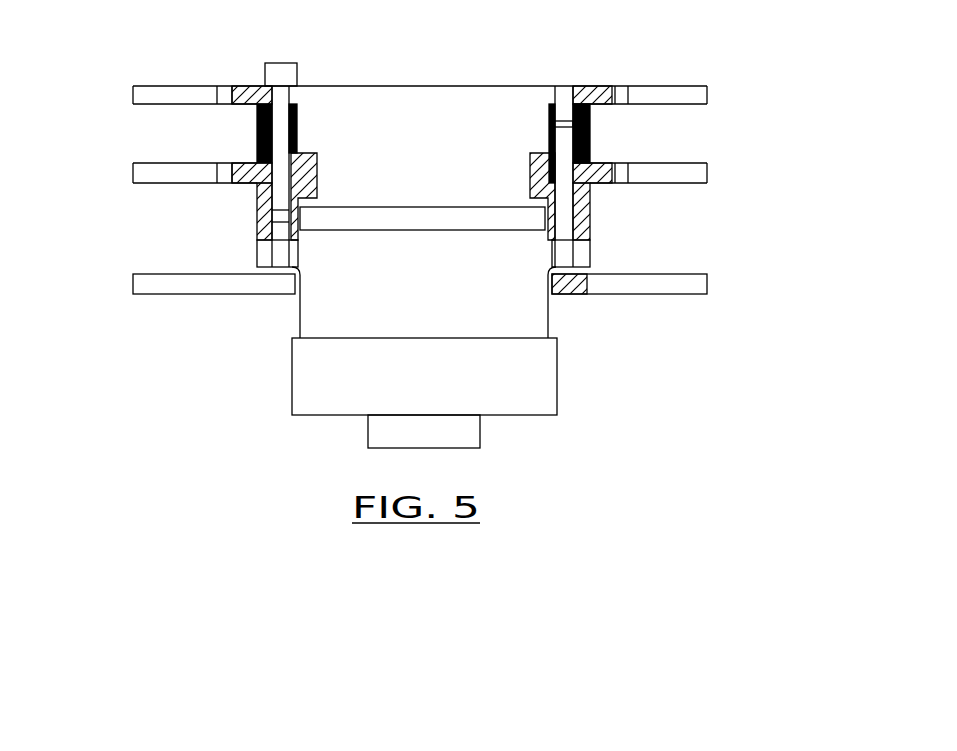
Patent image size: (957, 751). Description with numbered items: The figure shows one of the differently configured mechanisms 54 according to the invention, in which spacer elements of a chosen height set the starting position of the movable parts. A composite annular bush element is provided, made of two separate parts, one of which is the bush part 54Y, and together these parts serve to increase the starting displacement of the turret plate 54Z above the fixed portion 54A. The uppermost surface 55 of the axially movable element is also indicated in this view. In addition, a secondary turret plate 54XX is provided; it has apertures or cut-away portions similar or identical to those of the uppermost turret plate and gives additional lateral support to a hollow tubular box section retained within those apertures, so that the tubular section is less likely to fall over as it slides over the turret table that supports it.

The mechanism 54 is at (257, 85).
The turret plate 54Z is at (135, 98).
The annular bush element part 54Y is at (258, 215).
The uppermost surface of the axially movable element 55 is at (447, 215).
The secondary turret plate 54XX is at (682, 177).
The fixed portion 54A is at (457, 392).